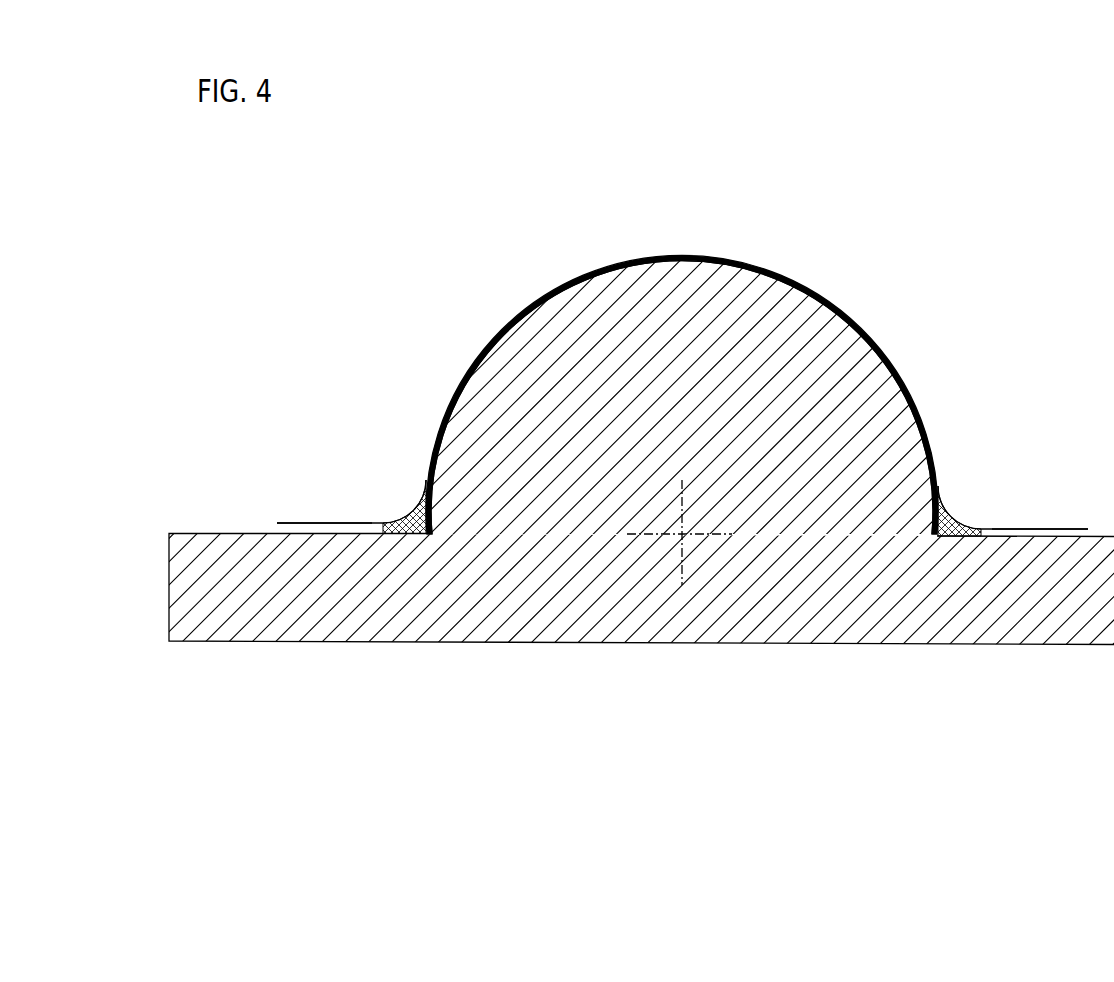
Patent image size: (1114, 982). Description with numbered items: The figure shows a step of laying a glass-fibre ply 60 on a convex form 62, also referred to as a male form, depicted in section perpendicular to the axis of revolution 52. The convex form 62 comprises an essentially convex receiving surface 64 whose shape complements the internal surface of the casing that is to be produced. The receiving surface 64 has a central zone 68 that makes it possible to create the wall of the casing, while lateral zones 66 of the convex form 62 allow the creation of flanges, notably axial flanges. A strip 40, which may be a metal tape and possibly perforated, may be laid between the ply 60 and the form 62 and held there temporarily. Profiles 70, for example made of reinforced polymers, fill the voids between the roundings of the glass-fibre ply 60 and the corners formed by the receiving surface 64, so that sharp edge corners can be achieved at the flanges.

The strip 40 is at (681, 255).
The axis of revolution 52 is at (682, 534).
The glass-fibre ply 60 is at (565, 283).
The convex form 62 is at (735, 593).
The receiving surface 64 is at (821, 298).
The lateral zones 66 is at (316, 472).
The central zone 68 is at (795, 210).
The profiles 70 is at (405, 510).